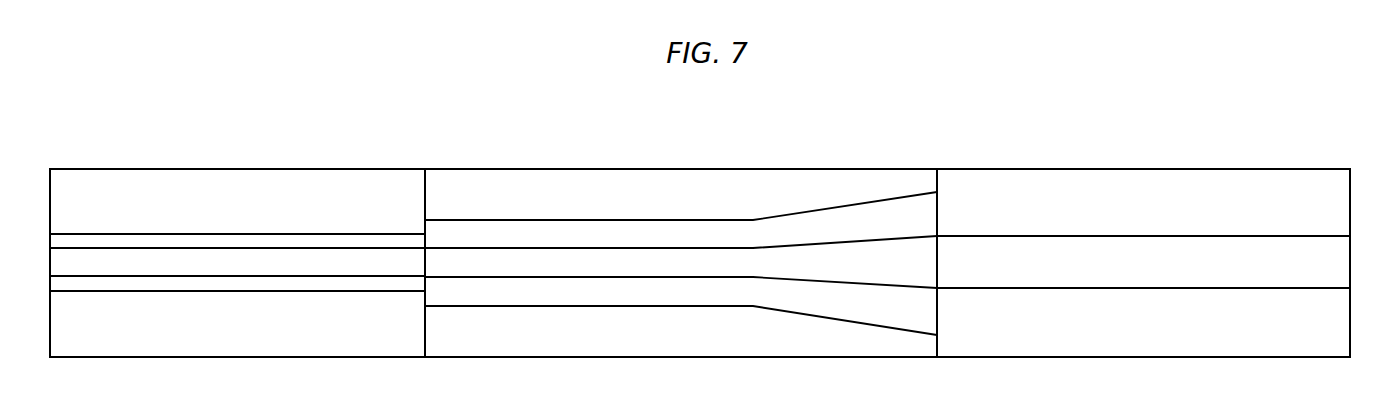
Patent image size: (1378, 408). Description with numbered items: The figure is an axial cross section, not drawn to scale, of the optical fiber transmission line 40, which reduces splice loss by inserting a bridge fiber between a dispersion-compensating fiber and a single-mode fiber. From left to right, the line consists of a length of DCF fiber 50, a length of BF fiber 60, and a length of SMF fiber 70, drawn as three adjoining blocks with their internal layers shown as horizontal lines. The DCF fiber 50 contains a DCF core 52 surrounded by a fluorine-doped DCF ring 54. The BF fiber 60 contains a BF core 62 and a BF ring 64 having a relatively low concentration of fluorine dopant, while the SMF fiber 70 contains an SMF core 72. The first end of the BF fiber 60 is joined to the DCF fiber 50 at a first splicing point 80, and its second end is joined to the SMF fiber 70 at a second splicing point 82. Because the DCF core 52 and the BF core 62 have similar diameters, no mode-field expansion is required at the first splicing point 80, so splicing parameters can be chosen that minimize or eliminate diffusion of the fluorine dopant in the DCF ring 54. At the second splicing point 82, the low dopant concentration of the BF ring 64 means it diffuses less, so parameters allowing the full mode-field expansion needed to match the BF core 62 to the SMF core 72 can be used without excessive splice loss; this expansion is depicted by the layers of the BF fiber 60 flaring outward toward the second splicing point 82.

The transmission line 40 is at (1022, 106).
The DCF fiber 50 is at (137, 168).
The DCF core 52 is at (98, 255).
The DCF ring 54 is at (173, 243).
The BF fiber 60 is at (592, 168).
The BF core 62 is at (475, 252).
The BF ring 64 is at (527, 230).
The SMF fiber 70 is at (1068, 168).
The SMF core 72 is at (997, 245).
The first splicing point 80 is at (425, 175).
The second splicing point 82 is at (937, 175).